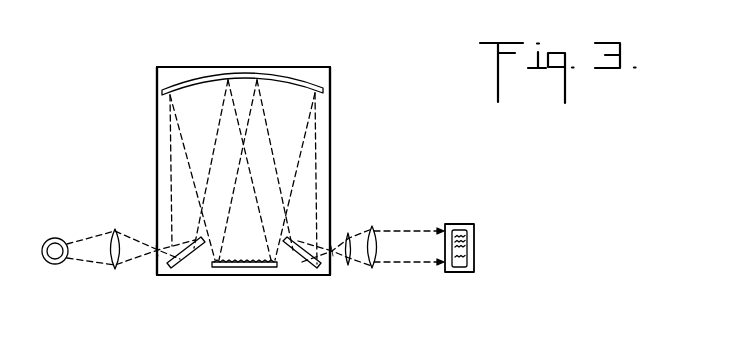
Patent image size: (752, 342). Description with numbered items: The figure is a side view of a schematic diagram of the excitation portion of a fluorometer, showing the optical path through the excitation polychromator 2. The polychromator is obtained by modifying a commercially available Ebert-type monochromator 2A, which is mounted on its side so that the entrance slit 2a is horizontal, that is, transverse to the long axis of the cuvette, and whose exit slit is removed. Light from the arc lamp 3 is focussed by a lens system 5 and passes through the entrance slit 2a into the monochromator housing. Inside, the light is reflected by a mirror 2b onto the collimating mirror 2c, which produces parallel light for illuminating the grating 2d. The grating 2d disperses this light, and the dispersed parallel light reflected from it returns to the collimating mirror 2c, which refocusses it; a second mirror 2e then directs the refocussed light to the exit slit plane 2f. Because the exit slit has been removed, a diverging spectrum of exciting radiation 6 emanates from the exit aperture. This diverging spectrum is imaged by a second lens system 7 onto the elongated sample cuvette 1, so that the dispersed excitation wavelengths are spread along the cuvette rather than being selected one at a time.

The elongated sample cuvette 1 is at (458, 224).
The excitation polychromator 2 is at (221, 63).
The monochromator 2A is at (157, 122).
The entrance slit 2a is at (155, 252).
The mirror 2b is at (192, 257).
The collimating mirror 2c is at (318, 82).
The grating 2d is at (235, 268).
The mirror 2e is at (305, 260).
The exit slit plane 2f is at (337, 255).
The arc lamp 3 is at (55, 238).
The lens system 5 is at (116, 228).
The diverging spectrum of exciting radiation 6 is at (348, 233).
The lens system 7 is at (373, 226).